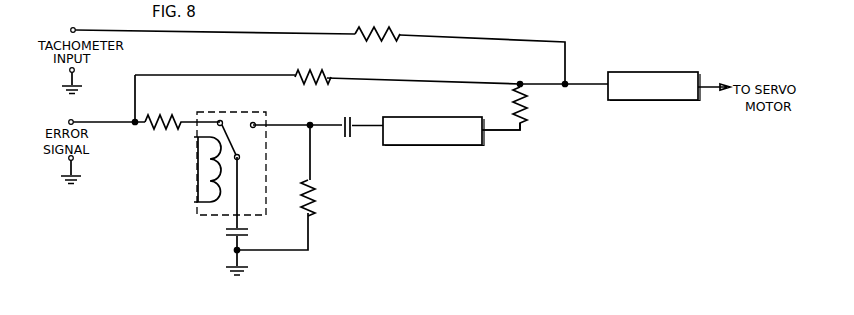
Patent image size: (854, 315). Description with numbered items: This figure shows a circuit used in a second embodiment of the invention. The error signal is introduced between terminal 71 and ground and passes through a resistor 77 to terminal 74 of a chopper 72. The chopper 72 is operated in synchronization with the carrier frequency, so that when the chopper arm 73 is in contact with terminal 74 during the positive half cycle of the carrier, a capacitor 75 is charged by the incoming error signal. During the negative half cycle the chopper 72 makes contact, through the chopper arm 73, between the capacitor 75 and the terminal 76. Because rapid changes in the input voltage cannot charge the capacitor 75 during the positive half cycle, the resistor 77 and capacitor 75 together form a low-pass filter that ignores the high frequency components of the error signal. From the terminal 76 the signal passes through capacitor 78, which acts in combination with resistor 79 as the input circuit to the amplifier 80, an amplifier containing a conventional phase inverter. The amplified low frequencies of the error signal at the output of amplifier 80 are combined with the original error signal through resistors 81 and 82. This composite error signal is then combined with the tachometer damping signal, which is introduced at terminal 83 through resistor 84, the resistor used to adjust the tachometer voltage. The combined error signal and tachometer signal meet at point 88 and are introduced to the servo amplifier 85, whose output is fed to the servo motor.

The terminal 71 is at (69, 119).
The chopper 72 is at (205, 170).
The chopper arm 73 is at (228, 136).
The terminal 74 is at (218, 121).
The capacitor 75 is at (226, 230).
The terminal 76 is at (256, 122).
The resistor 77 is at (160, 129).
The capacitor 78 is at (347, 143).
The resistor 79 is at (315, 199).
The amplifier 80 is at (470, 146).
The resistor 81 is at (302, 70).
The resistor 82 is at (524, 110).
The terminal 83 is at (71, 28).
The resistor 84 is at (393, 31).
The servo amplifier 85 is at (667, 101).
The point 88 is at (564, 88).